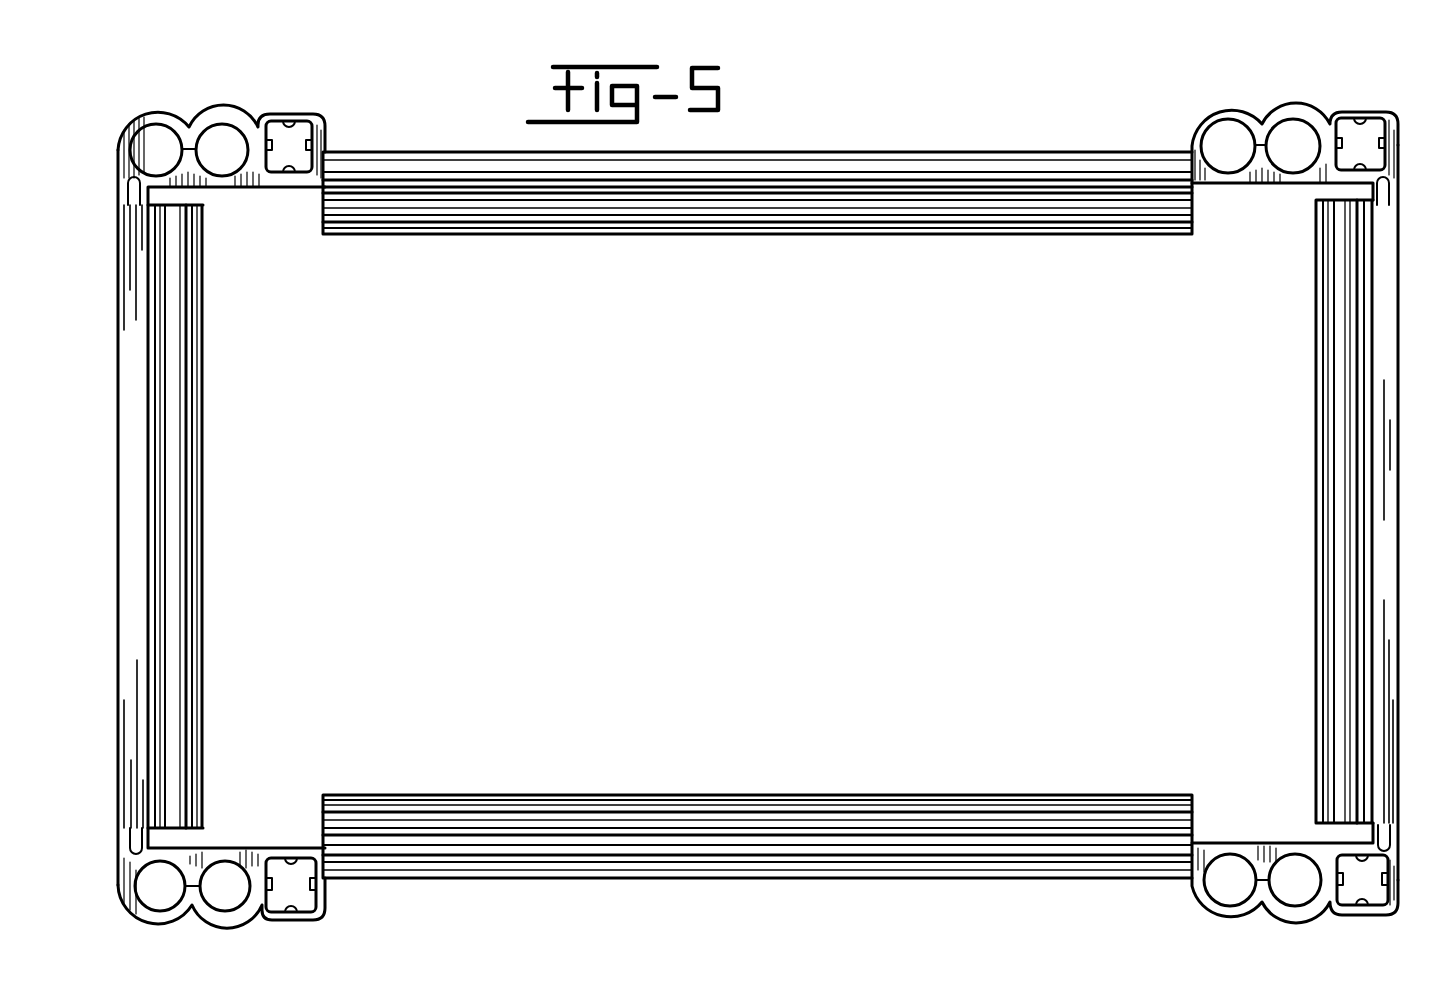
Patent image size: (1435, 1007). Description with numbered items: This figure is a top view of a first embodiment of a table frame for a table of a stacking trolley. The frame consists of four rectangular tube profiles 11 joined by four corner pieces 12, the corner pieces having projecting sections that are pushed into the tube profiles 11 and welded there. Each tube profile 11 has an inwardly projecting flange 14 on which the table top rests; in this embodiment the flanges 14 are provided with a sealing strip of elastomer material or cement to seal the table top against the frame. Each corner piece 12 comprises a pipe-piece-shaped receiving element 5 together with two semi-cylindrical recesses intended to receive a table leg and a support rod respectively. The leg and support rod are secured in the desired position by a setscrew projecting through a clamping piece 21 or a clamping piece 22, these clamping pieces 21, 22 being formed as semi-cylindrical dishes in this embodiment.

The receiving element 5 is at (325, 905).
The tube profile 11 is at (940, 162).
The corner piece 12 is at (238, 187).
The flange 14 is at (666, 208).
The clamping piece 21 is at (1214, 912).
The clamping piece 22 is at (1298, 911).